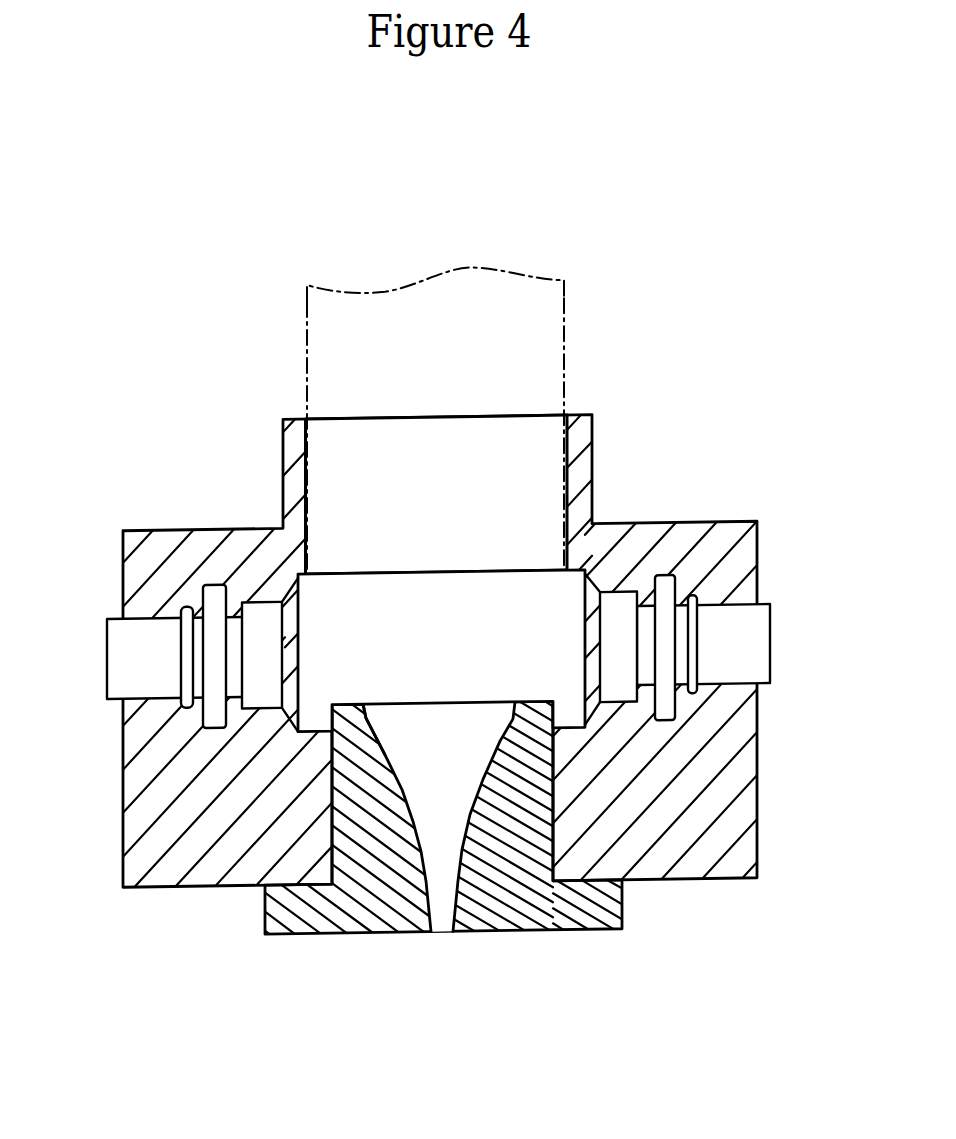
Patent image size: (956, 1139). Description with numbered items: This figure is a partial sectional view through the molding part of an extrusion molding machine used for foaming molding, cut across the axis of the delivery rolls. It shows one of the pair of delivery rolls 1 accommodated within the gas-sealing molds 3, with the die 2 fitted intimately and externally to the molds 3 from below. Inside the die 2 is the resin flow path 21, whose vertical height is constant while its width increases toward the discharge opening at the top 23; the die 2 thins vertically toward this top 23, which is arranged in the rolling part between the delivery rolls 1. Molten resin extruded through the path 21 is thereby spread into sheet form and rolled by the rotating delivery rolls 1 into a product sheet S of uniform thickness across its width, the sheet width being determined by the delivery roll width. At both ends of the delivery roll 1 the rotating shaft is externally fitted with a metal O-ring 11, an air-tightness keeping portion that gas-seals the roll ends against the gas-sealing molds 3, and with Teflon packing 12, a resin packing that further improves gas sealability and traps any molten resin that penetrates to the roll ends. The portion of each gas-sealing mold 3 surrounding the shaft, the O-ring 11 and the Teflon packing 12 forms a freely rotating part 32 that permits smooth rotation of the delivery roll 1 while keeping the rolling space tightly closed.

The delivery roll 1 is at (541, 586).
The die 2 is at (544, 915).
The resin flow path 21 is at (442, 886).
The top 23 is at (347, 724).
The gas-sealing mold 3 is at (735, 816).
The freely rotating part 32 is at (687, 703).
The metal O-ring 11 is at (185, 604).
The Teflon packing 12 is at (213, 598).
The product sheet S is at (565, 334).